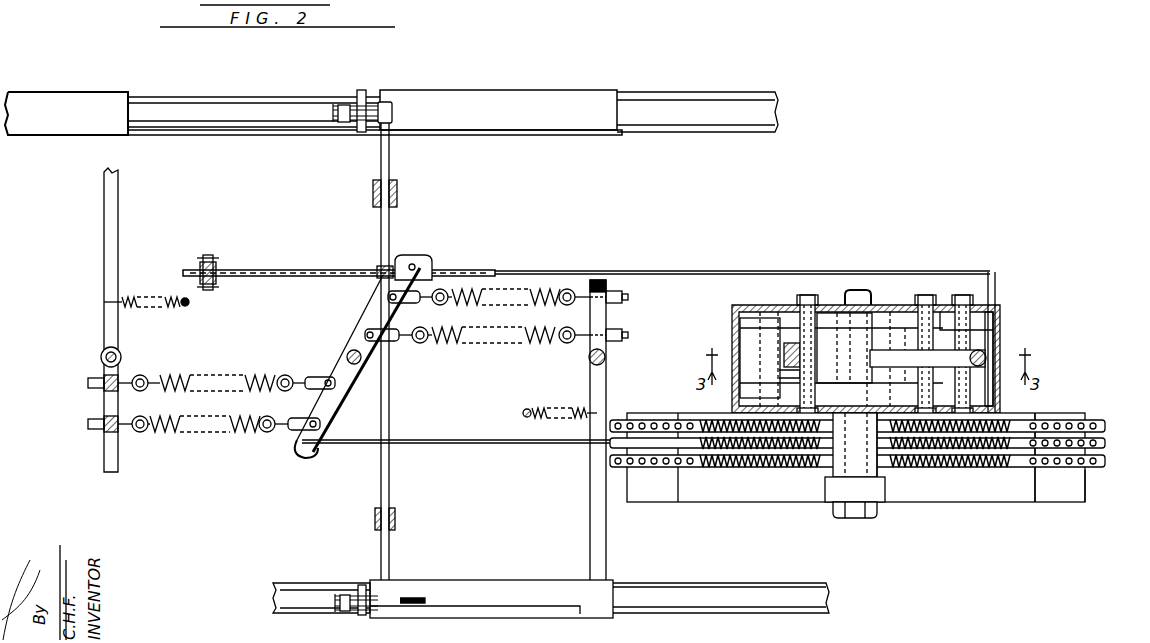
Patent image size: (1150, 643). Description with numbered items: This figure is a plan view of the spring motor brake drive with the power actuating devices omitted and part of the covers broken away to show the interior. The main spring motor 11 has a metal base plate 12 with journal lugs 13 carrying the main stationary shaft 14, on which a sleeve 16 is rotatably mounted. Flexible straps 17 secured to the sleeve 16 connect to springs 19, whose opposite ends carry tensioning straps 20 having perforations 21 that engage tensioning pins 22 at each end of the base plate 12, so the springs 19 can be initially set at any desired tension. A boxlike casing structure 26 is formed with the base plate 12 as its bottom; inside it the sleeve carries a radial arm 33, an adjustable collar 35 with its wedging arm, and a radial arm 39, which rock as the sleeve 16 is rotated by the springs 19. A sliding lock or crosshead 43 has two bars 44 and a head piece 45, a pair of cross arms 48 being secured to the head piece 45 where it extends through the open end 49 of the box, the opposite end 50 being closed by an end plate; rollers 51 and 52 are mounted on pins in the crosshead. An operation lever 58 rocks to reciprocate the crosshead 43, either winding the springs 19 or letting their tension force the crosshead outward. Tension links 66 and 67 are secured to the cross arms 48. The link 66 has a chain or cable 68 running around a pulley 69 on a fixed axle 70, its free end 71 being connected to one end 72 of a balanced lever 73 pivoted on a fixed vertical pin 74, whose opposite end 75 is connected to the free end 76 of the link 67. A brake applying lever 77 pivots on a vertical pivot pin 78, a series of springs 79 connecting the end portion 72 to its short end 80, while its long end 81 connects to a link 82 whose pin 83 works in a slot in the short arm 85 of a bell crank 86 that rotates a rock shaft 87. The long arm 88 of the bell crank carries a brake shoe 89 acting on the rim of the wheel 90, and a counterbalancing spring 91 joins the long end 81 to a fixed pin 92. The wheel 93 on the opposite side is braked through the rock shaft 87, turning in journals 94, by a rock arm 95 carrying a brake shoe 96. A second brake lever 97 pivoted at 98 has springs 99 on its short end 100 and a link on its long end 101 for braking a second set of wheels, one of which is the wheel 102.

The main spring motor 11 is at (950, 513).
The base plate 12 is at (1005, 505).
The journal lugs 13 is at (840, 495).
The main stationary shaft 14 is at (850, 520).
The sleeve 16 is at (830, 470).
The flexible straps 17 is at (880, 470).
The springs 19 is at (750, 470).
The tensioning straps 20 is at (1100, 470).
The perforations 21 is at (1095, 420).
The tensioning pins 22 is at (655, 470).
The boxlike casing structure 26 is at (958, 288).
The radial arm 33 is at (782, 343).
The adjustable collar 35 is at (784, 357).
The radial arm 39 is at (782, 375).
The sliding lock or crosshead 43 is at (862, 300).
The bars 44 is at (785, 295).
The head piece 45 is at (985, 322).
The cross arms 48 is at (974, 300).
The open end 49 is at (988, 312).
The opposite end 50 is at (732, 337).
The roller 51 is at (826, 300).
The roller 52 is at (928, 294).
The operation lever 58 is at (986, 356).
The tension link 66 is at (672, 272).
The tension link 67 is at (558, 445).
The chain or cable 68 is at (262, 272).
The pulley 69 is at (200, 268).
The fixed axle 70 is at (208, 258).
The free end 71 is at (380, 268).
The end of balanced lever 72 is at (418, 262).
The balanced lever 73 is at (350, 311).
The fixed vertical pin 74 is at (347, 356).
The opposite end of balanced lever 75 is at (296, 448).
The free end of link 76 is at (332, 378).
The brake applying lever 77 is at (598, 446).
The vertical pivot pin 78 is at (606, 355).
The springs 79 is at (545, 285).
The short end 80 is at (610, 318).
The long end 81 is at (588, 548).
The link 82 is at (538, 612).
The pin 83 is at (420, 612).
The short arm 85 is at (410, 598).
The bell crank 86 is at (345, 628).
The rock shaft 87 is at (392, 161).
The long arm 88 is at (345, 596).
The brake shoe 89 is at (362, 615).
The wheel 90 is at (470, 615).
The counterbalancing spring 91 is at (545, 408).
The fixed pin 92 is at (522, 413).
The wheel 93 is at (500, 102).
The journals 94 is at (372, 196).
The rock arm 95 is at (342, 108).
The brake shoe 96 is at (364, 95).
The second brake lever 97 is at (104, 250).
The pivot 98 is at (100, 362).
The springs 99 is at (170, 435).
The short end 100 is at (104, 440).
The long end 101 is at (79, 320).
The wheel 102 is at (85, 82).